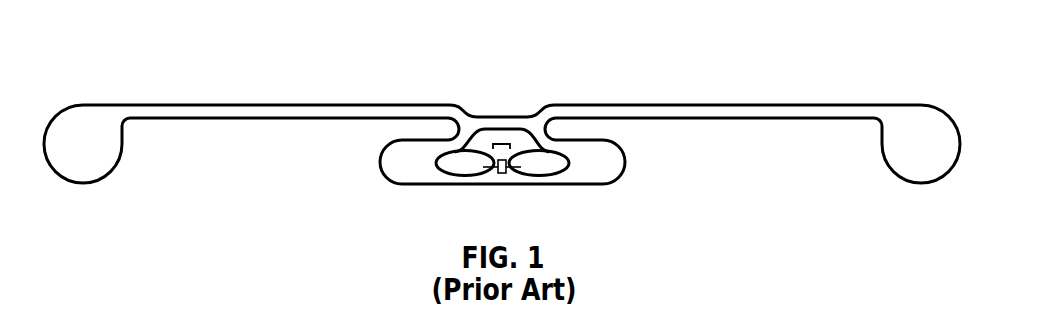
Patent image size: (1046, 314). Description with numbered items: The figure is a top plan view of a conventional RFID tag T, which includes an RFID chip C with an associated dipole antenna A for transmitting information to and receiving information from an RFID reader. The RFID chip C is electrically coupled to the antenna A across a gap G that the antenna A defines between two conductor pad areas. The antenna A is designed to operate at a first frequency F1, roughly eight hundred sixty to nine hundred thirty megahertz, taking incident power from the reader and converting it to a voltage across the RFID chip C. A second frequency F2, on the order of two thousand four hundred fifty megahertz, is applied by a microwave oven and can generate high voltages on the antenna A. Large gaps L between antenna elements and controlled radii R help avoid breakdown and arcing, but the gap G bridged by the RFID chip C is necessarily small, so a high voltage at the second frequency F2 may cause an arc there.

The RFID tag T is at (147, 71).
The dipole antenna A is at (634, 109).
The large gaps L is at (387, 132).
The controlled radii R is at (900, 166).
The RFID chip C is at (502, 176).
The gap G is at (502, 144).
The first frequency F1 is at (607, 47).
The second frequency F2 is at (391, 47).